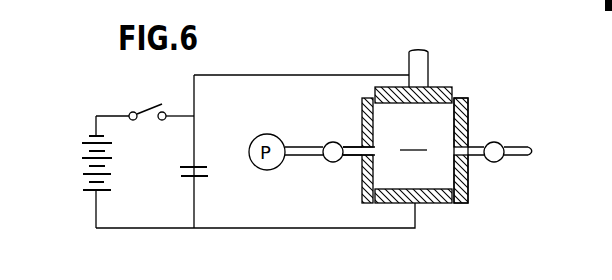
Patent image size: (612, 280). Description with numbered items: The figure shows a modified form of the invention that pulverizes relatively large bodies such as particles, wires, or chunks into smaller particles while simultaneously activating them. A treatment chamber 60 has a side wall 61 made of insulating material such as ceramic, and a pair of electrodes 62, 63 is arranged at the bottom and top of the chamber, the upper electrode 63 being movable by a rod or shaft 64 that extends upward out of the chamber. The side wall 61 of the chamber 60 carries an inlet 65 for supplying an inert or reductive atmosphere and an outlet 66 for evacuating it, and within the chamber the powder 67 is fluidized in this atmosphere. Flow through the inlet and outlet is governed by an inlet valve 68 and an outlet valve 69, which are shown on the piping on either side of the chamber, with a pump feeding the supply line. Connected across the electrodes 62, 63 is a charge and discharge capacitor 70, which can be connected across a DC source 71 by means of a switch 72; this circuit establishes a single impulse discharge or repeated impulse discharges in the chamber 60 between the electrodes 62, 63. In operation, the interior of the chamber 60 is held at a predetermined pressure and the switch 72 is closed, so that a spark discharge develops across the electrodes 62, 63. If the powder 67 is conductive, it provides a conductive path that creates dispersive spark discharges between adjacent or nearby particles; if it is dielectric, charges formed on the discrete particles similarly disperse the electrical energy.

The treatment chamber 60 is at (470, 191).
The side wall 61 is at (466, 106).
The electrode 62 is at (418, 203).
The electrode 63 is at (451, 88).
The rod or shaft 64 is at (428, 53).
The inlet 65 is at (472, 151).
The inlet valve 66 is at (330, 142).
The powder 67 is at (413, 140).
The inlet valve 68 is at (502, 145).
The outlet valve 69 is at (329, 162).
The charge and discharge capacitor 70 is at (184, 175).
The DC source 71 is at (88, 165).
The switch 72 is at (159, 77).